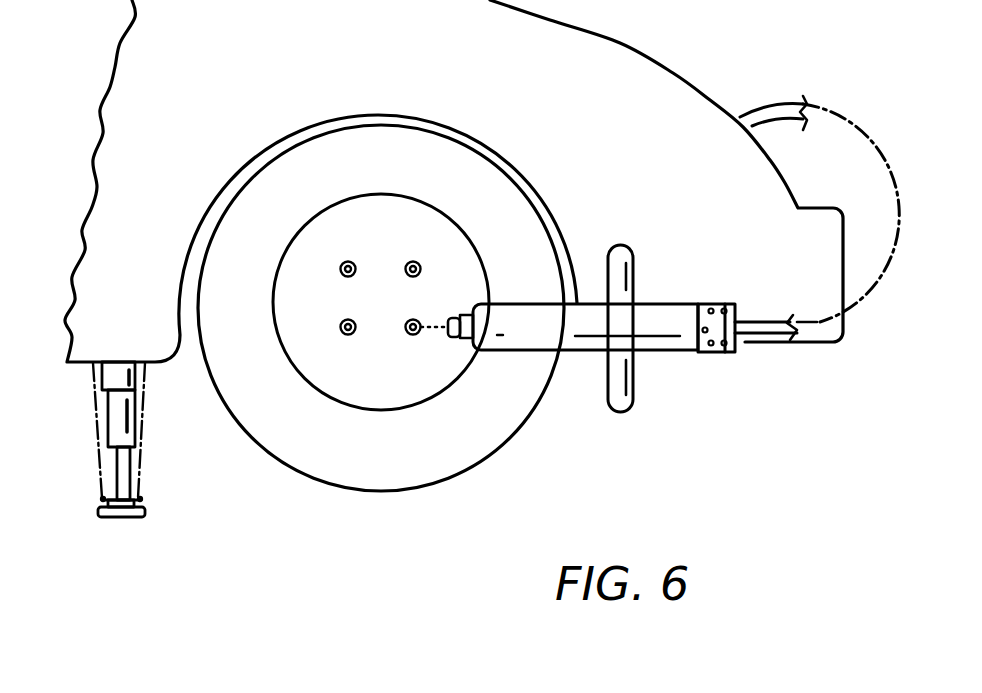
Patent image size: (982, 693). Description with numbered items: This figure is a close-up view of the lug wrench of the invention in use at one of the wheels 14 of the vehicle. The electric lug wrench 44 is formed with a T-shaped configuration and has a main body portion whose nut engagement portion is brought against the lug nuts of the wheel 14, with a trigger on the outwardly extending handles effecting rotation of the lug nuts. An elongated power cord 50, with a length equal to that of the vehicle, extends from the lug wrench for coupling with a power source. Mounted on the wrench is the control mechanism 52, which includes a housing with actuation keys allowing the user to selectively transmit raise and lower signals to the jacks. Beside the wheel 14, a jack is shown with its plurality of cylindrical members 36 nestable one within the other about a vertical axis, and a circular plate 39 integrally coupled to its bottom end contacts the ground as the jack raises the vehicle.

The wheel 14 is at (293, 472).
The cylindrical members 36 is at (128, 435).
The circular plate 39 is at (125, 518).
The electric lug wrench 44 is at (585, 350).
The power cord 50 is at (760, 110).
The control mechanism 52 is at (707, 352).